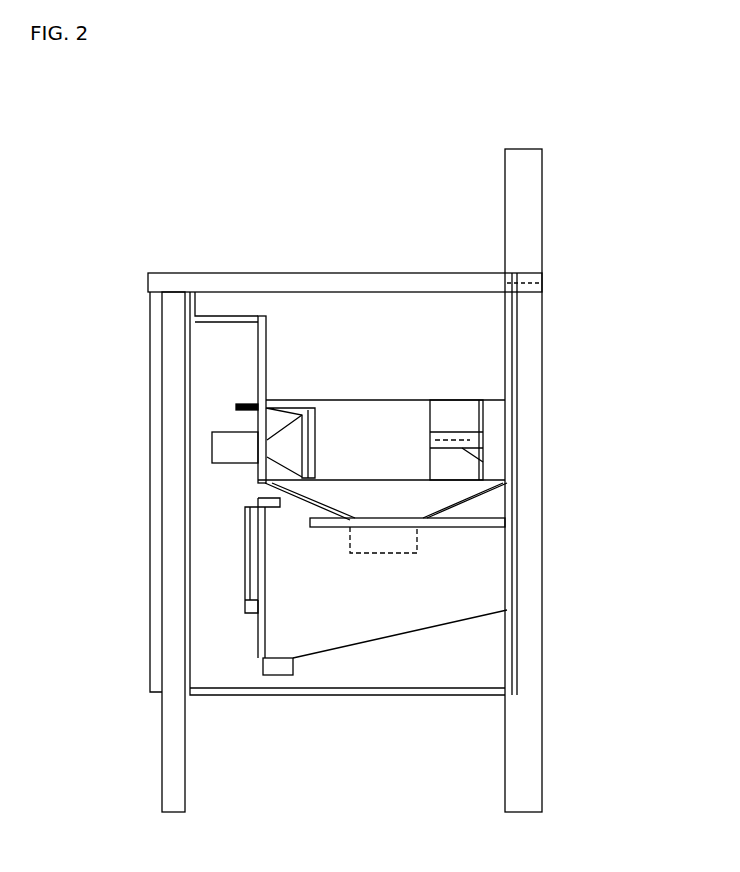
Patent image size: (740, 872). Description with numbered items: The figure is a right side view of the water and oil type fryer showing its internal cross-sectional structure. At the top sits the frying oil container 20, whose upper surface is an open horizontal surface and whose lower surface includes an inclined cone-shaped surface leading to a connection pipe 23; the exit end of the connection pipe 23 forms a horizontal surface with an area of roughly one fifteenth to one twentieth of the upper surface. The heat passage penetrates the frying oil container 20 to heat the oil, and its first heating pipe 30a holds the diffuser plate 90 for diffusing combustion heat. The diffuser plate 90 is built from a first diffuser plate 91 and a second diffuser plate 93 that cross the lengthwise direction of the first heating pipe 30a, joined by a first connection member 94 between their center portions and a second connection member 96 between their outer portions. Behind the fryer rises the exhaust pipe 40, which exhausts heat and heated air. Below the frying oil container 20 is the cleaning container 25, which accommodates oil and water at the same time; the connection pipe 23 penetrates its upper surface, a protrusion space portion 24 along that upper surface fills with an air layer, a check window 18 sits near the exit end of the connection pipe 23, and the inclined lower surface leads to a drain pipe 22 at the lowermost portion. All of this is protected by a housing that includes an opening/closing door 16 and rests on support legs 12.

The support legs 12 is at (175, 752).
The opening/closing door 16 is at (150, 553).
The check window 18 is at (245, 527).
The frying oil container 20 is at (488, 325).
The drain pipe 22 is at (270, 668).
The connection pipe 23 is at (417, 548).
The protrusion space portion 24 is at (243, 512).
The cleaning container 25 is at (463, 585).
The first heating pipe 30a is at (407, 398).
The exhaust pipe 40 is at (530, 200).
The diffuser plate 90 is at (546, 454).
The first diffuser plate 91 is at (433, 408).
The second diffuser plate 93 is at (483, 422).
The first connection member 94 is at (465, 442).
The second connection member 96 is at (462, 448).